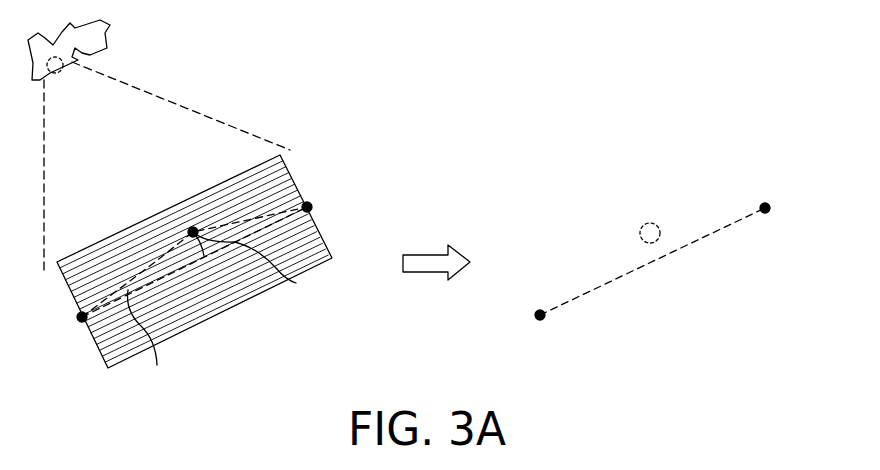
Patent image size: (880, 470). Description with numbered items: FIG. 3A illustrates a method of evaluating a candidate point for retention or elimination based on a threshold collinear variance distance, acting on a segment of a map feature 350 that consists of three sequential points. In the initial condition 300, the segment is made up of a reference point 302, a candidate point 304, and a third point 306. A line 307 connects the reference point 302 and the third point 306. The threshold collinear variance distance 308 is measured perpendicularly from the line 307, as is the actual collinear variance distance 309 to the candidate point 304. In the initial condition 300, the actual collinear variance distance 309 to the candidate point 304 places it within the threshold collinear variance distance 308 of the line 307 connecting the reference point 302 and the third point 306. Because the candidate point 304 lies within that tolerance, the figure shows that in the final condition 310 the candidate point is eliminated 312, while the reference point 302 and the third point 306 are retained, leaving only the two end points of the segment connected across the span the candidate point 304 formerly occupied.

The initial condition 300 is at (138, 147).
The reference point 302 is at (80, 318).
The candidate point 304 is at (192, 230).
The third point 306 is at (309, 205).
The line 307 is at (150, 339).
The threshold collinear variance distance 308 is at (228, 310).
The actual collinear variance distance 309 is at (296, 283).
The final condition 310 is at (577, 193).
The eliminated candidate point 312 is at (656, 224).
The map feature 350 is at (108, 24).